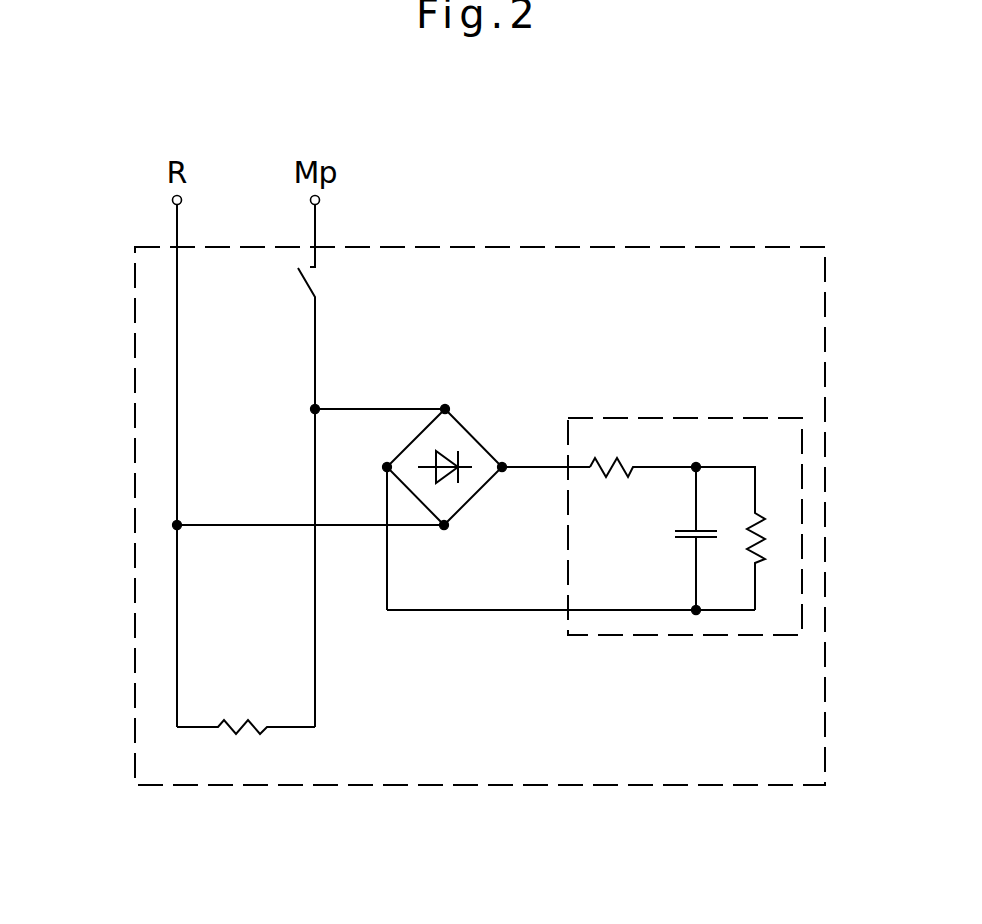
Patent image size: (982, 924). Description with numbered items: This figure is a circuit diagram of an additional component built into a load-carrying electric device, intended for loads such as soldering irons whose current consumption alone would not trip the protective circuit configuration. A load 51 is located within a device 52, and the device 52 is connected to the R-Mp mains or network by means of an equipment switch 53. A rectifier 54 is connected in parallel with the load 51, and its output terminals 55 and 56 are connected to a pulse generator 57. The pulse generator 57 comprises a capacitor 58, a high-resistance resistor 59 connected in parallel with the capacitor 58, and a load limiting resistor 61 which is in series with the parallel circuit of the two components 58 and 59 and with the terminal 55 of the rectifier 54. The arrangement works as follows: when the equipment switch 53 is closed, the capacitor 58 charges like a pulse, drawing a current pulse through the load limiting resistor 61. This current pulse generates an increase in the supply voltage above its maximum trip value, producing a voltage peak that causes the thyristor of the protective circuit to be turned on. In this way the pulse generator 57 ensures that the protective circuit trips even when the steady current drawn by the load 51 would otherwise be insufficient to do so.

The load 51 is at (237, 730).
The device 52 is at (593, 247).
The equipment switch 53 is at (312, 287).
The rectifier 54 is at (463, 427).
The output terminal 55 is at (502, 467).
The output terminal 56 is at (387, 467).
The pulse generator 57 is at (661, 418).
The capacitor 58 is at (703, 531).
The high-resistance resistor 59 is at (765, 547).
The load limiting resistor 61 is at (611, 462).